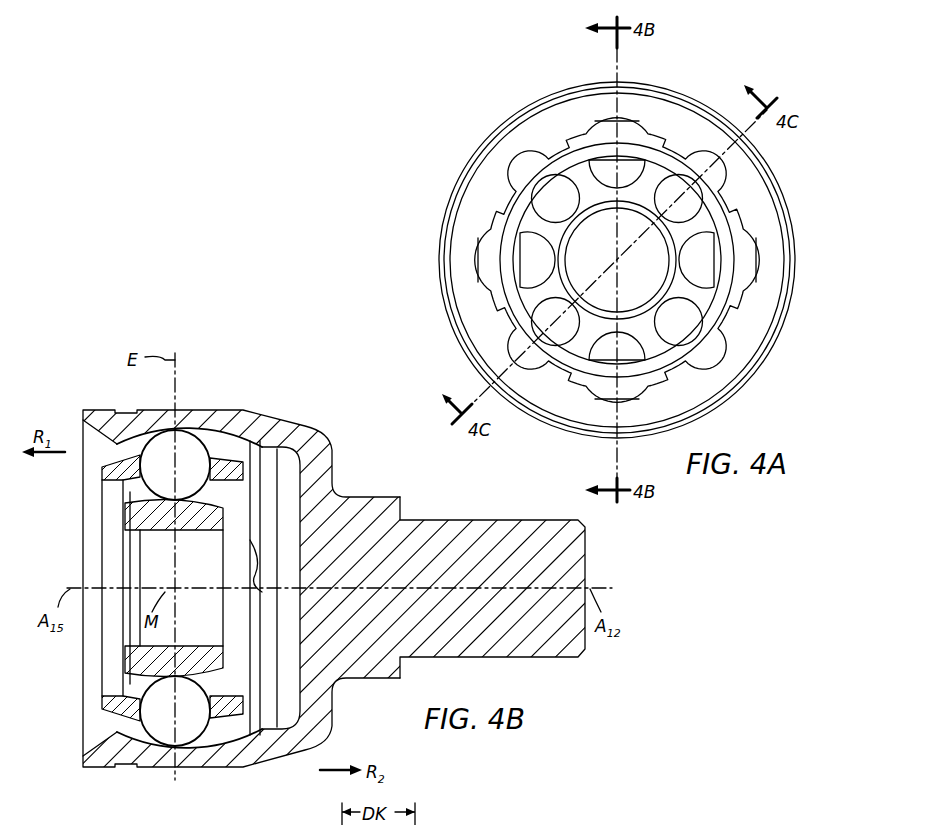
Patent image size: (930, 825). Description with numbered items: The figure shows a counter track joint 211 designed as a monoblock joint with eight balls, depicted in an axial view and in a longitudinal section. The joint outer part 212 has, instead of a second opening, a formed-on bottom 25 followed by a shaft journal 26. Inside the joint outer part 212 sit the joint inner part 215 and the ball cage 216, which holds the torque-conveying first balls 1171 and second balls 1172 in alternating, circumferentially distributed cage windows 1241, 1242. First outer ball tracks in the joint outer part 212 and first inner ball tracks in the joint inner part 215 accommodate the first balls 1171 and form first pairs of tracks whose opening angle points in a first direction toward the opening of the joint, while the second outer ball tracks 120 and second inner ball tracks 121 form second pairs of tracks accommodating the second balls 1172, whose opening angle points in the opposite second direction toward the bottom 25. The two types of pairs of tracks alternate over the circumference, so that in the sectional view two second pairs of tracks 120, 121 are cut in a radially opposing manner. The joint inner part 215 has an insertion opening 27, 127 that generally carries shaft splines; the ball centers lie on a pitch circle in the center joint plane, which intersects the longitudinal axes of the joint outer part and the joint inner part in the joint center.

In FIG. 4A, the counter track joint 211 is at (707, 58).
In FIG. 4B, the counter track joint 211 is at (286, 389).
In FIG. 4B, the joint outer part 212 is at (227, 418).
In FIG. 4B, the formed-on bottom 25 is at (313, 467).
In FIG. 4B, the shaft journal 26 is at (518, 543).
In FIG. 4A, the insertion opening 27 is at (600, 212).
In FIG. 4A, the first balls 1171 is at (713, 153).
In FIG. 4A, the second balls 1172 is at (603, 118).
In FIG. 4B, the second balls 1172 is at (162, 447).
In FIG. 4B, the first cage windows 1241 is at (420, 824).
In FIG. 4B, the second cage windows 1242 is at (188, 447).
In FIG. 4B, the second outer ball track 120 is at (115, 457).
In FIG. 4B, the second inner ball track 121 is at (122, 492).
In FIG. 4A, the joint inner part 215 is at (695, 290).
In FIG. 4B, the joint inner part 215 is at (122, 515).
In FIG. 4A, the ball cage 216 is at (713, 217).
In FIG. 4B, the ball cage 216 is at (115, 707).
In FIG. 4B, the insertion opening 127 is at (122, 555).